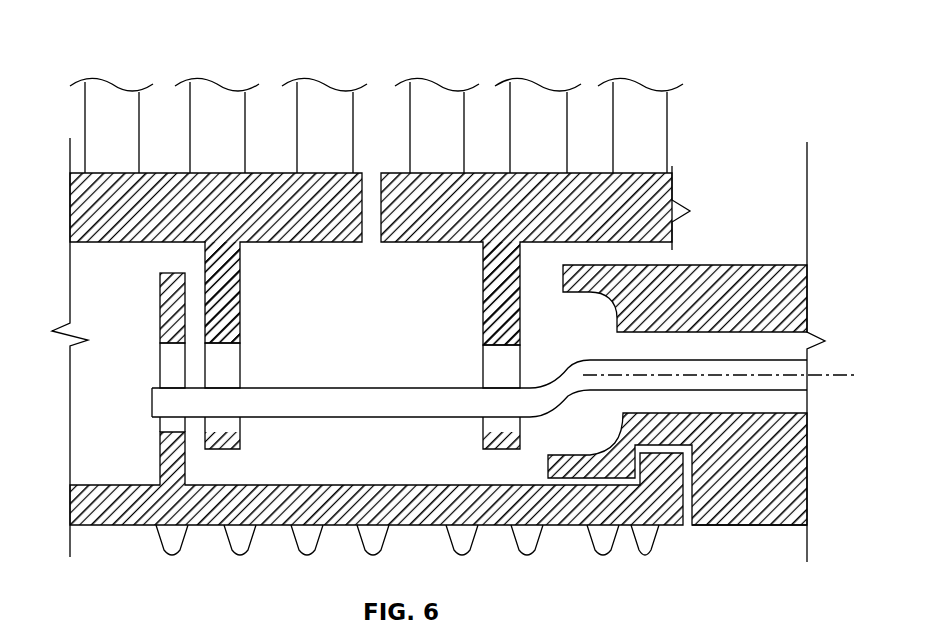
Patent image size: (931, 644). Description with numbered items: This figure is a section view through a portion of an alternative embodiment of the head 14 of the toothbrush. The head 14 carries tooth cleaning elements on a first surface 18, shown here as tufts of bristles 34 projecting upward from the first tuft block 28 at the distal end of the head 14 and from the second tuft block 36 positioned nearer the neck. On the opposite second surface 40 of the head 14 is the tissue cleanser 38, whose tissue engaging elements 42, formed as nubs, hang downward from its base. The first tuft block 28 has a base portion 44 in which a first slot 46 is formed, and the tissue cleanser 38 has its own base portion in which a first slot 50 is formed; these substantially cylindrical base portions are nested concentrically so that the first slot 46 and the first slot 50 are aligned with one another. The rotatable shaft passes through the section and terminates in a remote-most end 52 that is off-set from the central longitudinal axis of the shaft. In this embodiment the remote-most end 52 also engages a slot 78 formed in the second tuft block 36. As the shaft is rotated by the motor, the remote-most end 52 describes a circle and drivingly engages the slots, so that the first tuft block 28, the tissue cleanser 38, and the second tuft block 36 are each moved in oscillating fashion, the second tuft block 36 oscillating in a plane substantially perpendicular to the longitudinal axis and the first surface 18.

The head 14 is at (783, 490).
The first surface 18 is at (472, 170).
The first tuft block 28 is at (70, 195).
The tufts of bristles 34 is at (657, 125).
The second tuft block 36 is at (672, 230).
The tissue cleanser 38 is at (662, 507).
The second surface 40 is at (753, 528).
The tissue engaging elements 42 is at (308, 540).
The base portion 44 is at (222, 273).
The first slot 46 is at (225, 355).
The first slot 50 is at (173, 355).
The remote-most end 52 is at (323, 400).
The slot 78 is at (498, 358).